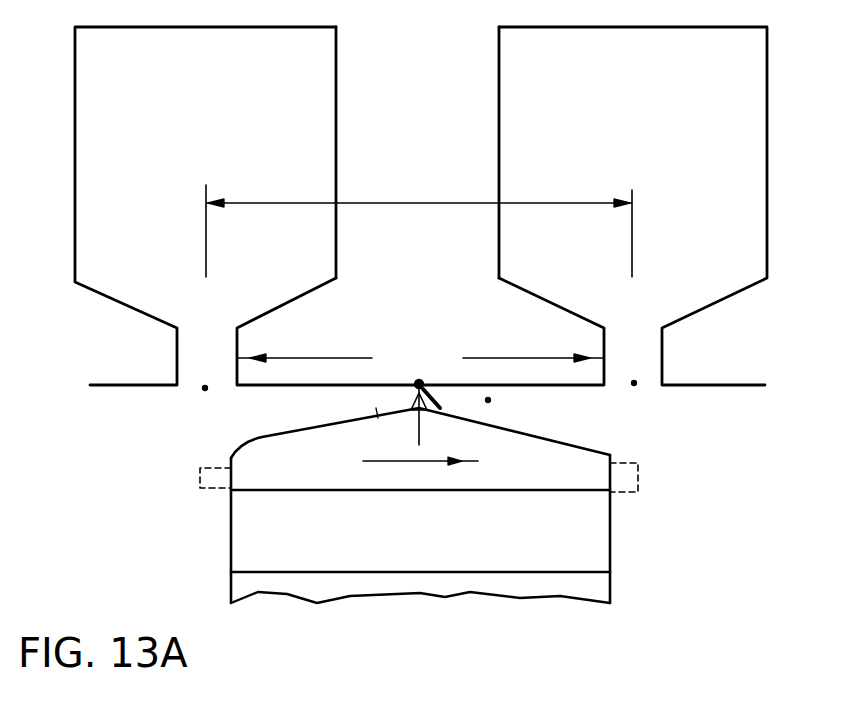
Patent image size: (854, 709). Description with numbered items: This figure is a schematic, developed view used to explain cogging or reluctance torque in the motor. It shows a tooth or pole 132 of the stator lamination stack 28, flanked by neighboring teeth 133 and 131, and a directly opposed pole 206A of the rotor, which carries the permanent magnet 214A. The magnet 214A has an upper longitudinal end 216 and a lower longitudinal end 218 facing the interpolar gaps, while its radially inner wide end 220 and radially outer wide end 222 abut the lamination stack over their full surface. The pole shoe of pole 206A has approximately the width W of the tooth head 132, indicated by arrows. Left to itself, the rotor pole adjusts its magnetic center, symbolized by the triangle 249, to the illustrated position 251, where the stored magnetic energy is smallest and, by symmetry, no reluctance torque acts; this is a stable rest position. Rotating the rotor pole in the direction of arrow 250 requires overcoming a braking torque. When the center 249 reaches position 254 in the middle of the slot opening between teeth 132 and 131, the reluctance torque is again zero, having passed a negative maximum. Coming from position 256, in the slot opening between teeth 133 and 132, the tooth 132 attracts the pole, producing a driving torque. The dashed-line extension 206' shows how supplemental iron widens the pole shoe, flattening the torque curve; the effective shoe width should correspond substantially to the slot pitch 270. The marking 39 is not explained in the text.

The stator lamination stack 28 is at (422, 88).
The tooth or pole 132 is at (433, 325).
The tooth 133 is at (118, 320).
The tooth 131 is at (772, 357).
The slot pitch 270 is at (392, 203).
The width of tooth head W is at (420, 357).
The magnetic center 249 is at (412, 406).
The position 251 is at (440, 408).
The pole of rotor 206A is at (556, 475).
The arrow 250 is at (397, 462).
The wide end 222 is at (483, 490).
The wide end 220 is at (483, 572).
The upper longitudinal end 216 is at (231, 548).
The lower longitudinal end 218 is at (613, 508).
The permanent magnet 214A is at (583, 548).
The dashed-line extension 206' is at (167, 465).
The position 256 is at (185, 402).
The position 254 is at (637, 390).
The gap field region 39 is at (488, 400).